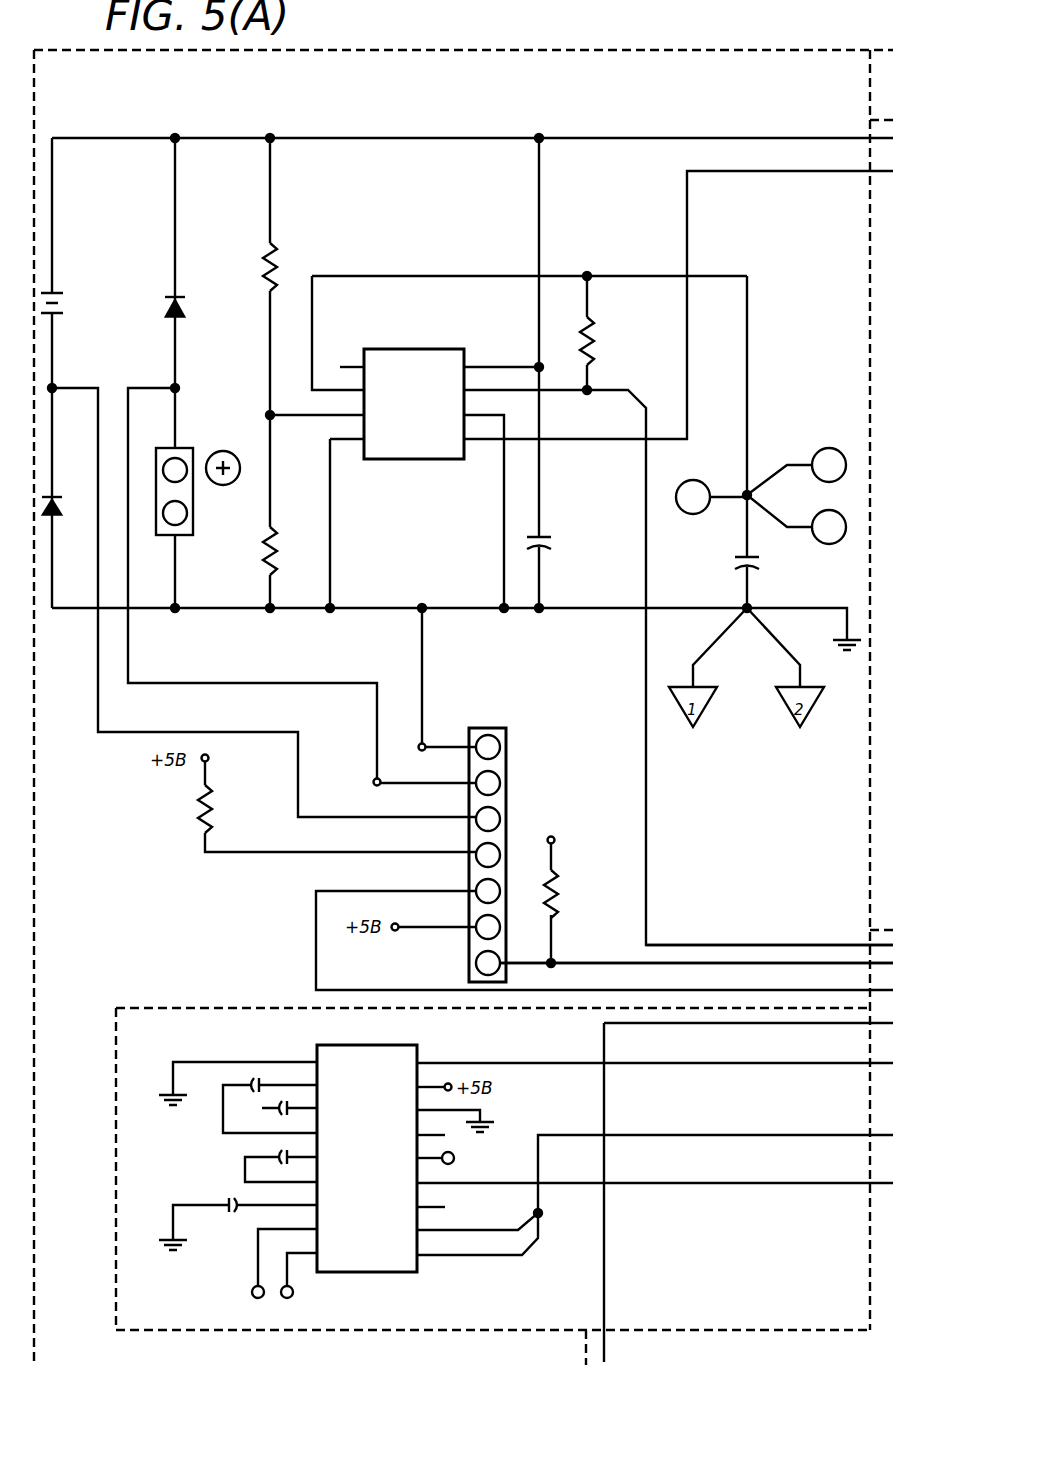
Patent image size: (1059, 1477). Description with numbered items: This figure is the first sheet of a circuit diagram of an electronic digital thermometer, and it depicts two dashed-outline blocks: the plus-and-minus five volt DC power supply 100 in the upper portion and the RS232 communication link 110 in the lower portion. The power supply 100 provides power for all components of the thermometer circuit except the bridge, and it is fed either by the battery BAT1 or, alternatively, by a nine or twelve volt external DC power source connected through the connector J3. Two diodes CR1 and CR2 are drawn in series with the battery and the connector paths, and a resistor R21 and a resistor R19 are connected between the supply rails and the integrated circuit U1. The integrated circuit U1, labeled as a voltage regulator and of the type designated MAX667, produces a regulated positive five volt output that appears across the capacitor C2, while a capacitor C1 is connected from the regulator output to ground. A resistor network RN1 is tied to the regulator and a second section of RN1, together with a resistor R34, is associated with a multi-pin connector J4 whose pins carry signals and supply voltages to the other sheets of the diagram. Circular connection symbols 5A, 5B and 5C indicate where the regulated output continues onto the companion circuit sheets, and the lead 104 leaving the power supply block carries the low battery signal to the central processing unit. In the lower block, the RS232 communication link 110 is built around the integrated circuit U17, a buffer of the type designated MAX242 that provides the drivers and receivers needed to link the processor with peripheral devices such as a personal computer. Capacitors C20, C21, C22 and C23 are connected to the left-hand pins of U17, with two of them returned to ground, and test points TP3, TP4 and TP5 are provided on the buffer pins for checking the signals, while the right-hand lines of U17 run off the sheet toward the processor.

The battery BAT1 is at (66, 308).
The diode CR1 is at (58, 494).
The diode CR2 is at (183, 315).
The resistor R21 is at (268, 256).
The resistor R19 is at (272, 540).
The connector J3 is at (194, 515).
The integrated circuit U1 is at (410, 460).
The resistor RN1 is at (590, 318).
The capacitor C1 is at (549, 540).
The capacitor C2 is at (737, 559).
The connection to FIG. 5A is at (693, 497).
The connection to FIG. 5B is at (829, 465).
The connection to FIG. 5C is at (829, 527).
The connector J4 is at (490, 727).
The resistor R34 is at (207, 795).
The lead 104 is at (742, 963).
The ±5 volt DC power supply 100 is at (463, 707).
The RS232 communication link 110 is at (493, 1169).
The integrated circuit U17 is at (362, 1273).
The capacitor C20 is at (253, 1080).
The capacitor C21 is at (277, 1108).
The capacitor C22 is at (277, 1155).
The capacitor C23 is at (230, 1213).
The test point TP3 is at (241, 1293).
The test point TP4 is at (285, 1304).
The test point TP5 is at (465, 1159).